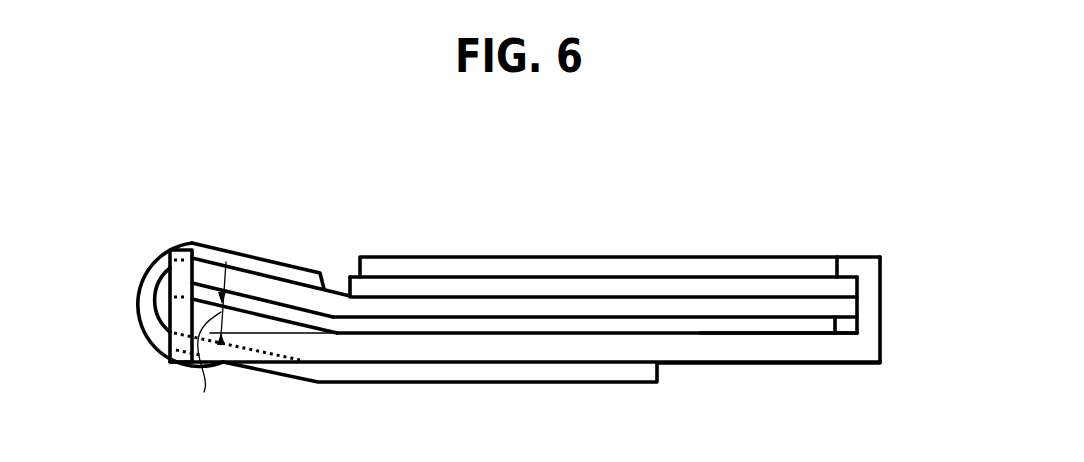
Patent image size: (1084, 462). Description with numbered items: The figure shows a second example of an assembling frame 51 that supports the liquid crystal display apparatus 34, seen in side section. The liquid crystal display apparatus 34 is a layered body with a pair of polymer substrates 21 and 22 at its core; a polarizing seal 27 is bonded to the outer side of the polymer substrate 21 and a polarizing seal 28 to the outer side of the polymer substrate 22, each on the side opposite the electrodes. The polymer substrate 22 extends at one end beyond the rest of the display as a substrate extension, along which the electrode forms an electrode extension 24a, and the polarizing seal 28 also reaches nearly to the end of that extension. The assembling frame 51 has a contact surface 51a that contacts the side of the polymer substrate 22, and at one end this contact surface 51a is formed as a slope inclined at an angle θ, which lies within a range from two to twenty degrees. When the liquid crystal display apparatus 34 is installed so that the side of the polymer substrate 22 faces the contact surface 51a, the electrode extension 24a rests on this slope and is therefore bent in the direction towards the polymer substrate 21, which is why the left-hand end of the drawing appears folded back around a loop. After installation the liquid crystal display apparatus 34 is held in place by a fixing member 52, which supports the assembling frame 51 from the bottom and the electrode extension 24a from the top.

The polymer substrate 21 is at (508, 285).
The polymer substrate 22 is at (587, 303).
The electrode extension 24a is at (330, 288).
The polarizing seal 27 is at (740, 323).
The polarizing seal 28 is at (685, 262).
The liquid crystal display apparatus 34 is at (454, 172).
The assembling frame 51 is at (750, 357).
The contact surface 51a is at (797, 330).
The fixing member 52 is at (260, 265).